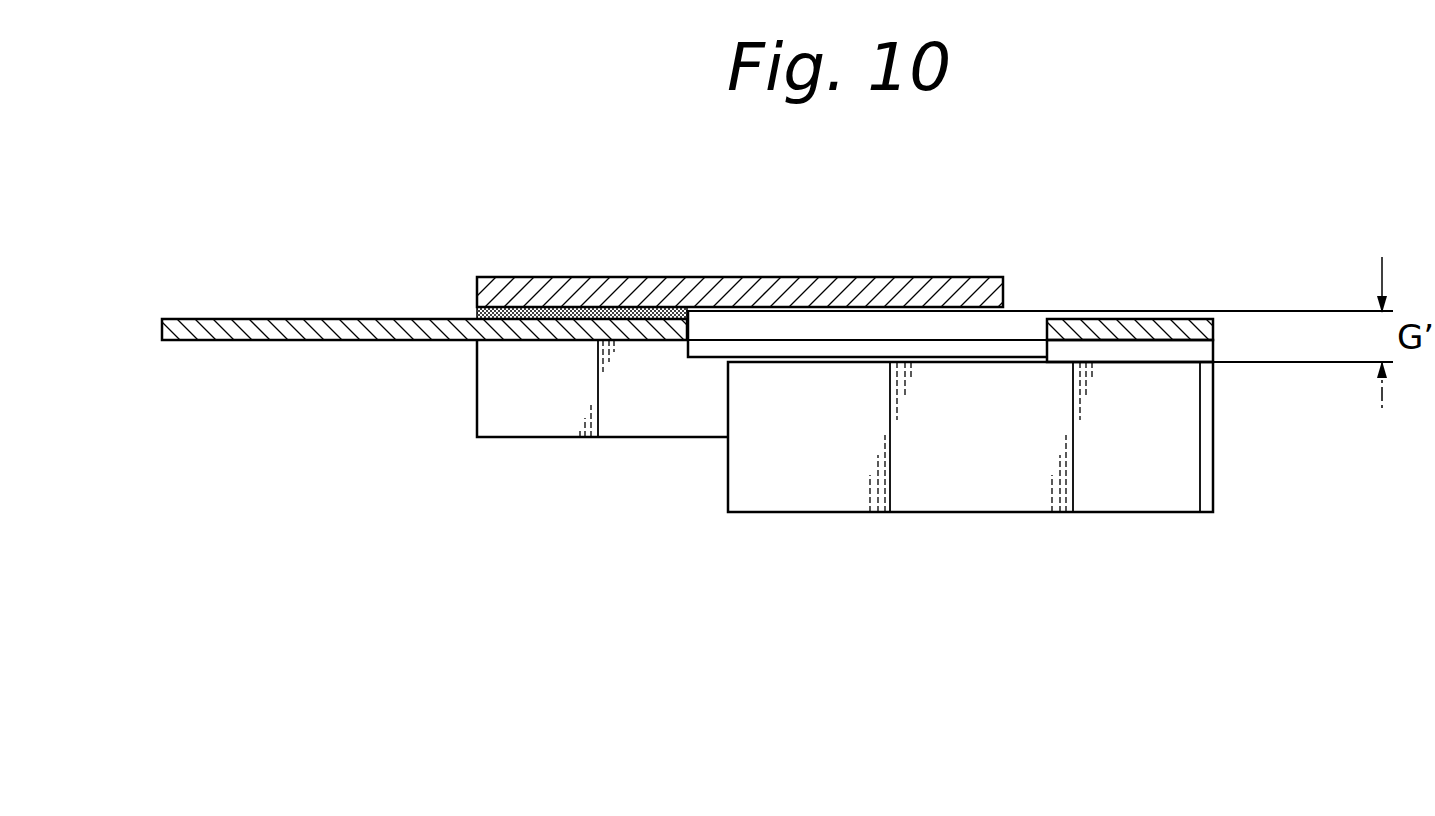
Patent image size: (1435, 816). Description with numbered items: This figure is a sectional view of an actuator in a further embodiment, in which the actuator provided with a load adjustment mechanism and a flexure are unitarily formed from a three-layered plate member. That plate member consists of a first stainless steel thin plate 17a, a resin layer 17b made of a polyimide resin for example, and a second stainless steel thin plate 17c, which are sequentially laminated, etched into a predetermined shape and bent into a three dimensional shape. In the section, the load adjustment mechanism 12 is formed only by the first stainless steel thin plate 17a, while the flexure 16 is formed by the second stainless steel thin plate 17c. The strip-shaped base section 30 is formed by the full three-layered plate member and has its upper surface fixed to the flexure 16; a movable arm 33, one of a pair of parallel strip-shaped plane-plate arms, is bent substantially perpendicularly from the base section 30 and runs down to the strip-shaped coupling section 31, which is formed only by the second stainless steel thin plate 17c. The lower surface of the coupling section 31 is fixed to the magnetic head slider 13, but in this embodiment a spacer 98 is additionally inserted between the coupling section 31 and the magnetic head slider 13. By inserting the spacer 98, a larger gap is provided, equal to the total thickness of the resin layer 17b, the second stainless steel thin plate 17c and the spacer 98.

The load adjustment mechanism 12 is at (820, 290).
The magnetic head slider 13 is at (983, 496).
The flexure 16 is at (270, 324).
The first stainless steel thin plate 17a is at (499, 297).
The resin layer 17b is at (478, 316).
The second stainless steel thin plate 17c is at (380, 335).
The base section 30 is at (562, 364).
The coupling section 31 is at (1132, 340).
The movable arm 33 is at (625, 420).
The spacer 98 is at (1193, 350).